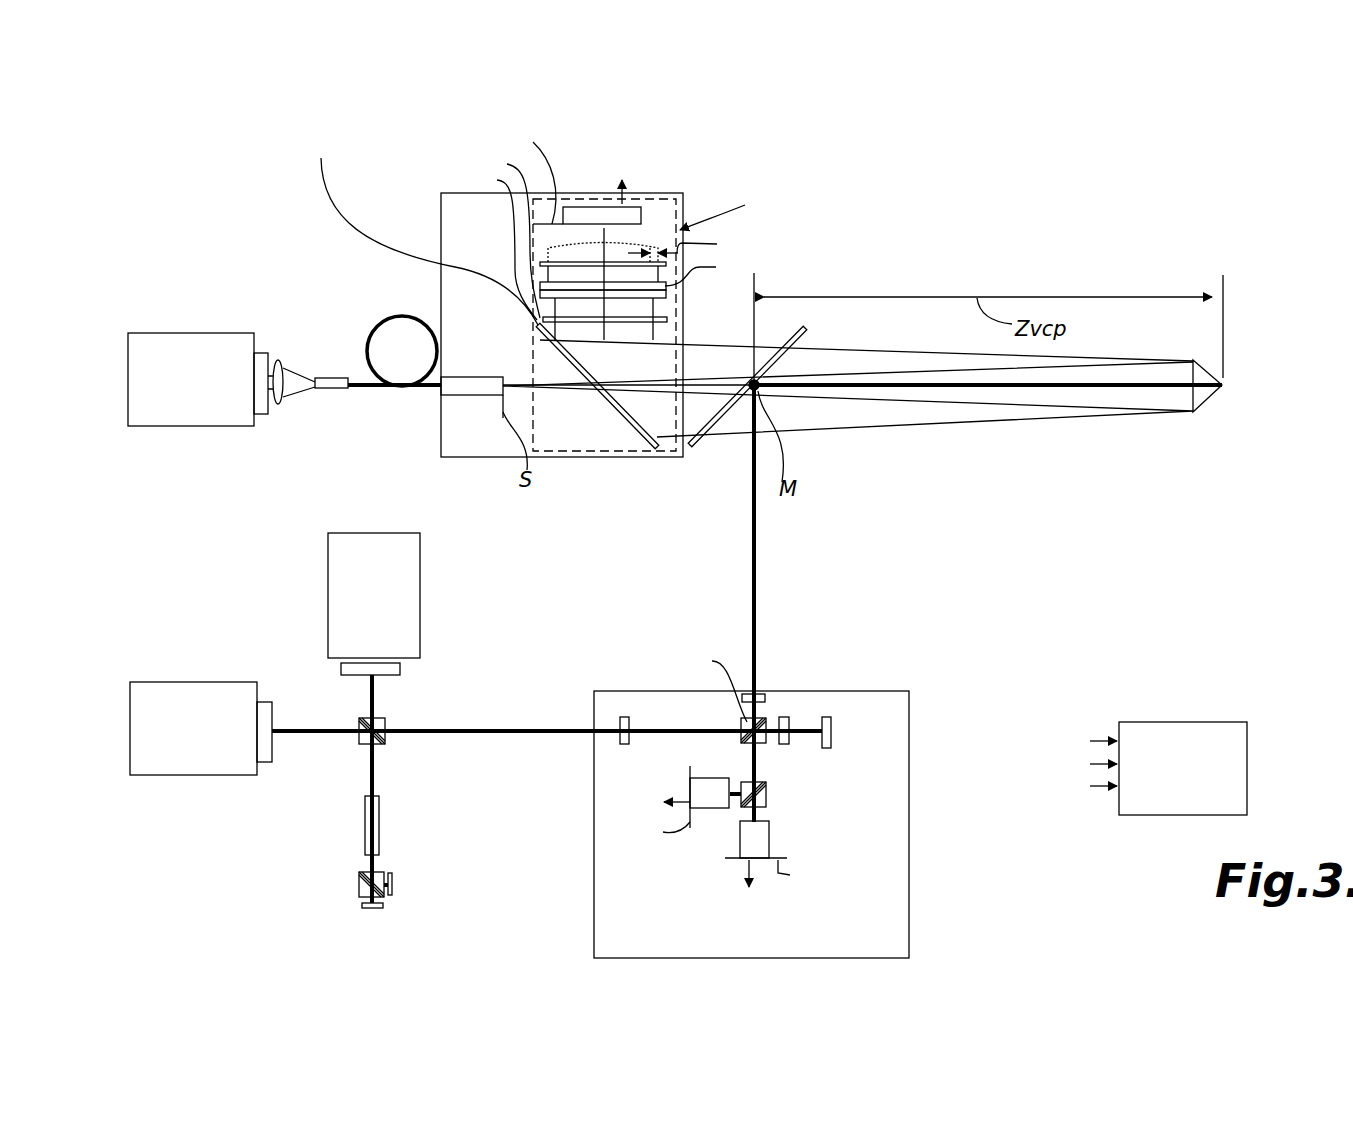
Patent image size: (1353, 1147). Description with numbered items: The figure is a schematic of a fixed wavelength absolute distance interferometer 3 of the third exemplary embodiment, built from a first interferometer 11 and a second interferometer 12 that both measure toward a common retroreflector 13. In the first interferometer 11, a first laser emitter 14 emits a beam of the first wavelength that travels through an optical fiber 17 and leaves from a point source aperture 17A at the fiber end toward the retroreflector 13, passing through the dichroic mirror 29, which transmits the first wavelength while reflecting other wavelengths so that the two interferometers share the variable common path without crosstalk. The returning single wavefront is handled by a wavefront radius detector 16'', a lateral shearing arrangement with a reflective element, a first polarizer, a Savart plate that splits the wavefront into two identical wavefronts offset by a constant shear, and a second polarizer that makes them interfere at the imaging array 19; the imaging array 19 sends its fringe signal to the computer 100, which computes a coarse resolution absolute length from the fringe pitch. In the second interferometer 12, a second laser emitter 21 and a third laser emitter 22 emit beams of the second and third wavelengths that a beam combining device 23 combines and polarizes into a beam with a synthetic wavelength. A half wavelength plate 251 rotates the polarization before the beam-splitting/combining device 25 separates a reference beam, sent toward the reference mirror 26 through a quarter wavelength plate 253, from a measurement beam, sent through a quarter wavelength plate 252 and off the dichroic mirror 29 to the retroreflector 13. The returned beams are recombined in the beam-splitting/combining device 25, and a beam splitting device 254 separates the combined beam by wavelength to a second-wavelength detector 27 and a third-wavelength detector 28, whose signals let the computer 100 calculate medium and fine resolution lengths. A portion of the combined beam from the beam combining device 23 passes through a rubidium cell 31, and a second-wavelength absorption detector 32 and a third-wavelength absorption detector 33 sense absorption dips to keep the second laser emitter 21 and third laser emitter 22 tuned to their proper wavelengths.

The fixed wavelength absolute distance interferometer 3 is at (1174, 558).
The first interferometer 11 is at (658, 193).
The second interferometer 12 is at (784, 787).
The retroreflector 13 is at (1215, 398).
The first laser emitter 14 is at (128, 378).
The wavefront radius detector 16'' is at (604, 342).
The optical fiber 17 is at (405, 318).
The point source aperture 17A is at (482, 395).
The imaging array 19 is at (593, 206).
The second laser emitter 21 is at (328, 557).
The third laser emitter 22 is at (130, 728).
The beam combining device 23 is at (384, 720).
The beam-splitting/combining device 25 is at (765, 743).
The reference mirror 26 is at (832, 735).
The λ2 detector 27 is at (707, 778).
The λ3 detector 28 is at (770, 835).
The dichroic mirror 29 is at (713, 425).
The rubidium cell 31 is at (365, 826).
The λ2 absorption detector 32 is at (373, 912).
The λ3 absorption detector 33 is at (392, 884).
The computer 100 is at (1154, 768).
The half wavelength plate 251 is at (625, 717).
The quarter wavelength plate 252 is at (748, 694).
The quarter wavelength plate 253 is at (785, 717).
The beam splitting device 254 is at (768, 792).